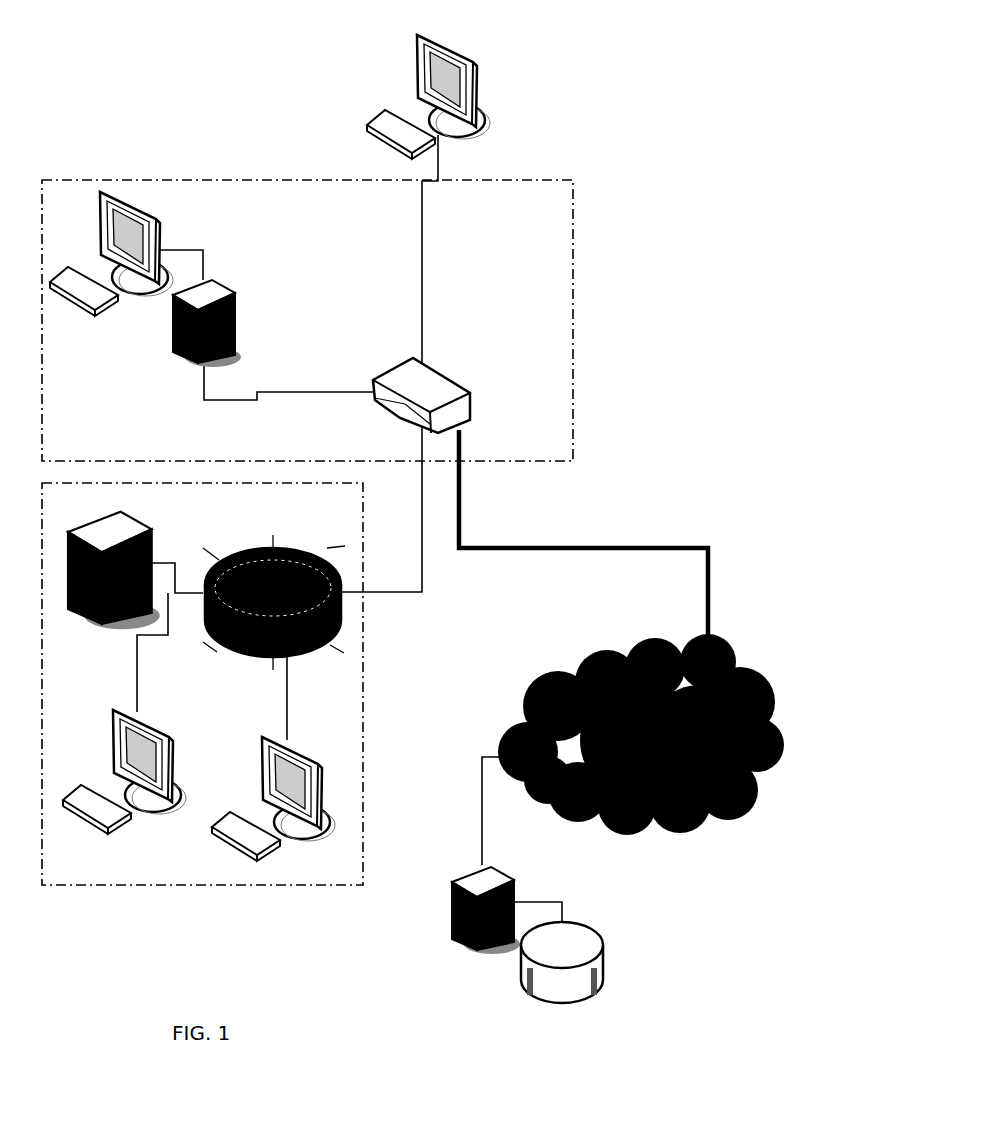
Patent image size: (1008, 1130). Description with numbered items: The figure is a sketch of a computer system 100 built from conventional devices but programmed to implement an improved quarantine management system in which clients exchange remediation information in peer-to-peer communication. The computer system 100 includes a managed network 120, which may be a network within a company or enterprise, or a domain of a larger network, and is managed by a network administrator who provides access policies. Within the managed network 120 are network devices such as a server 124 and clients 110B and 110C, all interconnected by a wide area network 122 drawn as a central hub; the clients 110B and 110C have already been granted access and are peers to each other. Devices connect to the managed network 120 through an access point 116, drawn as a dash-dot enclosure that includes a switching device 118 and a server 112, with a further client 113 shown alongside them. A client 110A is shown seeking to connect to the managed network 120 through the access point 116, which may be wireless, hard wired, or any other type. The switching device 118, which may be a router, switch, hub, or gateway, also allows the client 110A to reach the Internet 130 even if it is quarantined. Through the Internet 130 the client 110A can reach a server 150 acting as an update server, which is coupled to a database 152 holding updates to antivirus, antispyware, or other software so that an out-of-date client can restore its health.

The computer system 100 is at (604, 268).
The client 110A is at (408, 38).
The client 110B is at (142, 722).
The client 110C is at (321, 768).
The server 112 is at (240, 303).
The client computer 113 is at (160, 237).
The access point 116 is at (580, 402).
The switching device 118 is at (427, 372).
The managed network 120 is at (233, 887).
The wide area network 122 is at (298, 548).
The server 124 is at (123, 510).
The Internet 130 is at (780, 715).
The server 150 is at (455, 876).
The database 152 is at (603, 955).